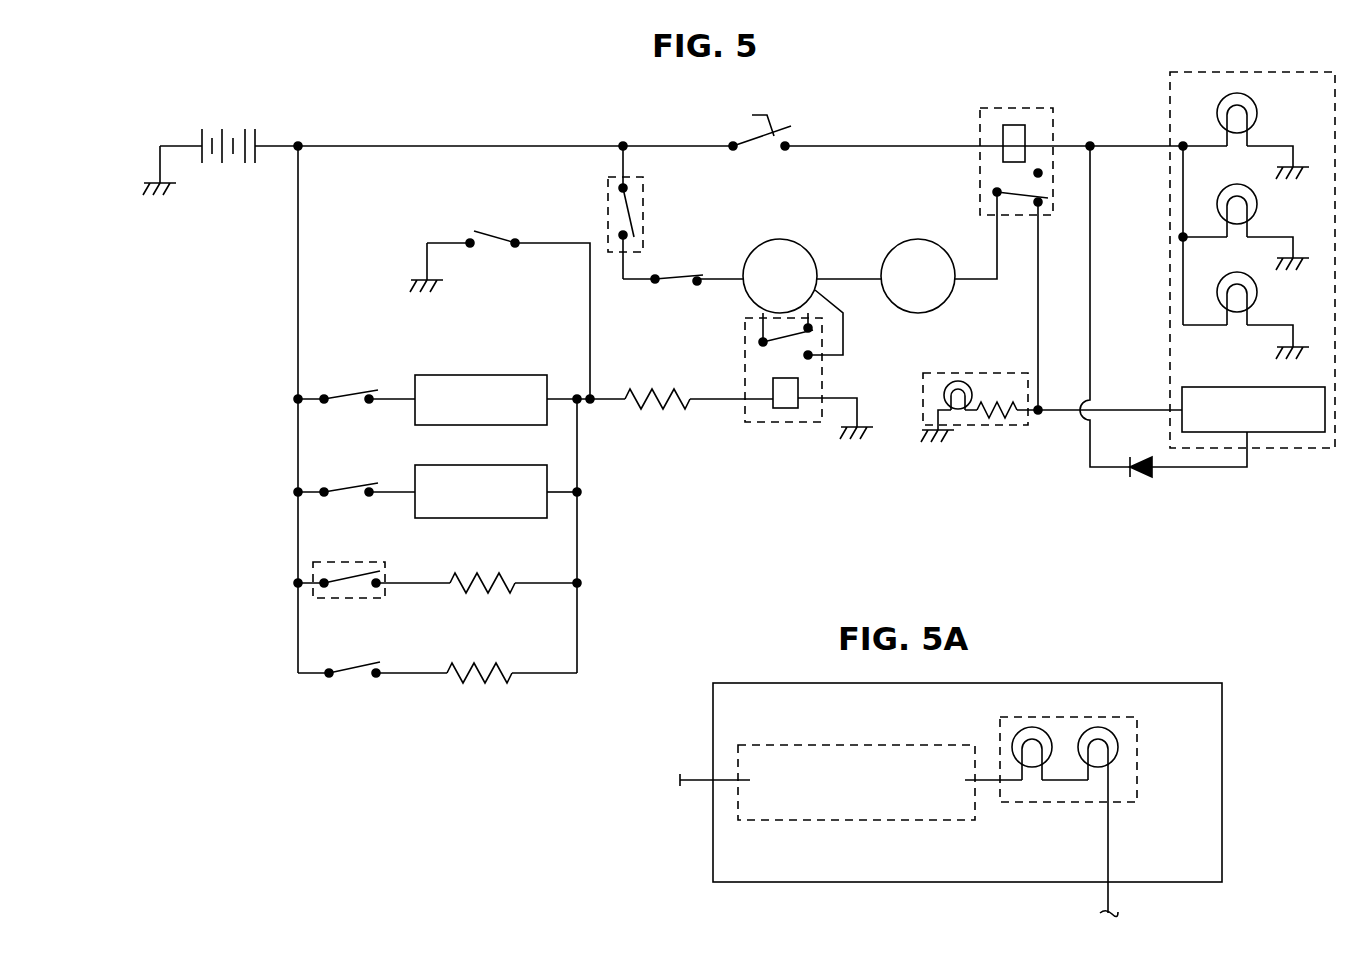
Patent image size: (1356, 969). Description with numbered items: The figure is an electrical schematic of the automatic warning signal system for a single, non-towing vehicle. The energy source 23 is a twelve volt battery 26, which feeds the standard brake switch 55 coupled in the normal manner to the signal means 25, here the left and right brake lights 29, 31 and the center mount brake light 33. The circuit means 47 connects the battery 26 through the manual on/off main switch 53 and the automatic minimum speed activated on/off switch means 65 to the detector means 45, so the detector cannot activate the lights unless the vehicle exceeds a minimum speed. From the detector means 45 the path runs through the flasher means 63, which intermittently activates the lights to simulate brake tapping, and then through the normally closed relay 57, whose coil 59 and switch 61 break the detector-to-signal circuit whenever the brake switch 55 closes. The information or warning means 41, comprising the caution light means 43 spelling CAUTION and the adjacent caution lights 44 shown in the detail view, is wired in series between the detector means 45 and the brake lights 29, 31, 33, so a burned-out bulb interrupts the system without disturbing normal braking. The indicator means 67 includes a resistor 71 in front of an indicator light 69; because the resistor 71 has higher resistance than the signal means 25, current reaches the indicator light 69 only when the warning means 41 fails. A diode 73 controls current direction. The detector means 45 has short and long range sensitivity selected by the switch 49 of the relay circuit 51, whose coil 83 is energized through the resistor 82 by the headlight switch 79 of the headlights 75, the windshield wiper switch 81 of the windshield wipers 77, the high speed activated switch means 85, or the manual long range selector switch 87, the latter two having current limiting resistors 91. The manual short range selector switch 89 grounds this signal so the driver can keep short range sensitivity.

In FIG. 5, the energy source 23 is at (236, 113).
In FIG. 5, the battery 26 is at (258, 146).
In FIG. 5, the brake switch 55 is at (747, 130).
In FIG. 5, the relay 57 is at (989, 238).
In FIG. 5, the coil 59 is at (1003, 135).
In FIG. 5, the switch 61 is at (997, 192).
In FIG. 5, the automatic minimum speed activated on/off switch means 65 is at (643, 215).
In FIG. 5, the manual on/off main switch 53 is at (667, 280).
In FIG. 5, the detector means 45 is at (797, 250).
In FIG. 5, the flasher means 63 is at (940, 304).
In FIG. 5, the switch 49 is at (763, 342).
In FIG. 5, the relay circuit 51 is at (786, 379).
In FIG. 5, the coil 83 is at (773, 402).
In FIG. 5, the resistor 82 is at (656, 392).
In FIG. 5, the manual short range selector switch 89 is at (488, 240).
In FIG. 5, the headlights 75 is at (503, 377).
In FIG. 5, the headlight switch 79 is at (362, 374).
In FIG. 5, the windshield wiper switch 81 is at (358, 488).
In FIG. 5, the windshield wipers 77 is at (486, 519).
In FIG. 5, the high speed activated switch means 85 is at (335, 600).
In FIG. 5, the manual long range selector switch 87 is at (352, 677).
In FIG. 5, the current limiting resistors 91 is at (480, 586).
In FIG. 5, the indicator light 69 is at (963, 380).
In FIG. 5, the resistor 71 is at (997, 402).
In FIG. 5, the indicator means 67 is at (979, 406).
In FIG. 5, the diode 73 is at (1158, 481).
In FIG. 5, the circuit means 47 is at (1157, 357).
In FIG. 5, the signal means 25 is at (1230, 238).
In FIG. 5, the left brake light 29 is at (1217, 112).
In FIG. 5, the center mount brake light 33 is at (1217, 204).
In FIG. 5, the right brake light 31 is at (1217, 292).
In FIG. 5, the information or warning means 41 is at (1252, 422).
In FIG. 5A, the information or warning means 41 is at (1068, 693).
In FIG. 5A, the caution light means 43 is at (805, 745).
In FIG. 5A, the caution lights 44 is at (1125, 717).